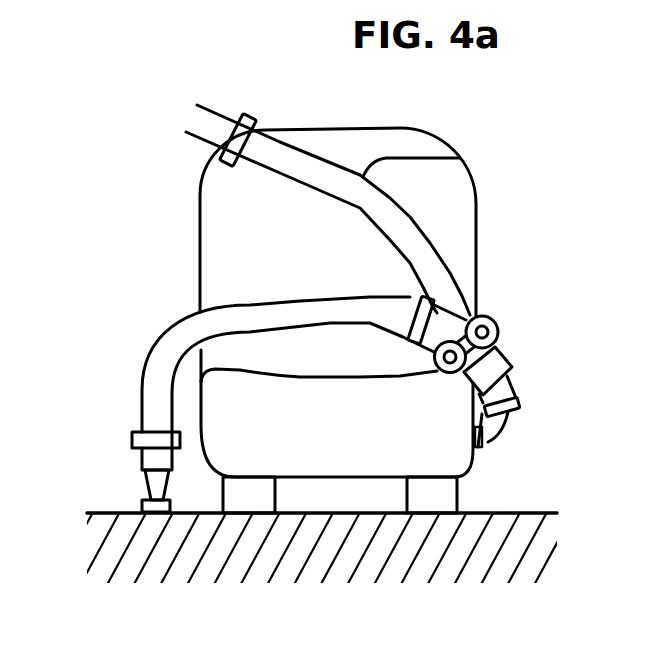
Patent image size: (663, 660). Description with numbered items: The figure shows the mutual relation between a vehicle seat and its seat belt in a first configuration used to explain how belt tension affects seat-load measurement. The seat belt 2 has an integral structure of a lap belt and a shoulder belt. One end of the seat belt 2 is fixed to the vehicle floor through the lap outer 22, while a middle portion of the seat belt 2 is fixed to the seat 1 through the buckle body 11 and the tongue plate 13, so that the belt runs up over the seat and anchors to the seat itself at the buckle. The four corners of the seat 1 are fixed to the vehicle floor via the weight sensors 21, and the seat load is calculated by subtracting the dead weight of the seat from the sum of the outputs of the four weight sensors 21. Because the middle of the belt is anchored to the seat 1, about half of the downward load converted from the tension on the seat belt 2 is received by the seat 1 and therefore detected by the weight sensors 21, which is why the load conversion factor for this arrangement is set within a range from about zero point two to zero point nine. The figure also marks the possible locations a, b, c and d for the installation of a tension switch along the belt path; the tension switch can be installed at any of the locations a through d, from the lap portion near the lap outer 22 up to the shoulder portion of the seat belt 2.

The seat 1 is at (430, 453).
The seat belt 2 is at (456, 159).
The buckle body 11 is at (510, 351).
The tongue plate 13 is at (500, 325).
The weight sensor 21 is at (243, 500).
The lap outer 22 is at (142, 494).
The tension switch installation position a is at (131, 442).
The tension switch installation position b is at (421, 297).
The tension switch installation position c is at (518, 402).
The tension switch installation position d is at (258, 128).